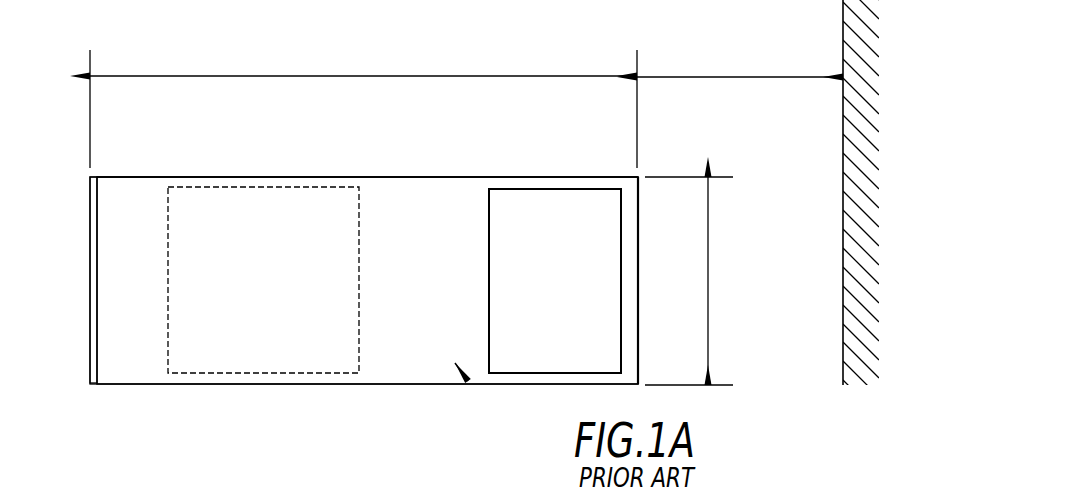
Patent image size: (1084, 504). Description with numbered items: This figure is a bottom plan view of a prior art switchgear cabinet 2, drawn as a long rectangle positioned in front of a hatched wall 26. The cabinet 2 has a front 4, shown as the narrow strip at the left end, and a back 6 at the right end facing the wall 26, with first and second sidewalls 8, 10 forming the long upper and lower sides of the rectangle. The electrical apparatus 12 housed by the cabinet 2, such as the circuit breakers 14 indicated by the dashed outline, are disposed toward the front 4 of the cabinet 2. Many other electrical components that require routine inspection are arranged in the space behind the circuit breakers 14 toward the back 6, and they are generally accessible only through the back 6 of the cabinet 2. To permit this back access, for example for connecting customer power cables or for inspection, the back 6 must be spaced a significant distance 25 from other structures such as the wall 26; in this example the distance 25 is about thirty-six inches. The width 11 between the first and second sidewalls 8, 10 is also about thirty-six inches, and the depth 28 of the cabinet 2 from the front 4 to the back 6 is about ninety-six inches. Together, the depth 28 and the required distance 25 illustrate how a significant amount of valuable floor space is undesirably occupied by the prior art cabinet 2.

The switchgear cabinet 2 is at (55, 386).
The front 4 is at (89, 202).
The back 6 is at (639, 265).
The first sidewall 8 is at (397, 384).
The second sidewall 10 is at (445, 177).
The width 11 is at (708, 270).
The electrical apparatus 12 is at (483, 408).
The circuit breakers 14 is at (310, 362).
The distance 25 is at (735, 76).
The wall 26 is at (842, 32).
The depth 28 is at (362, 75).